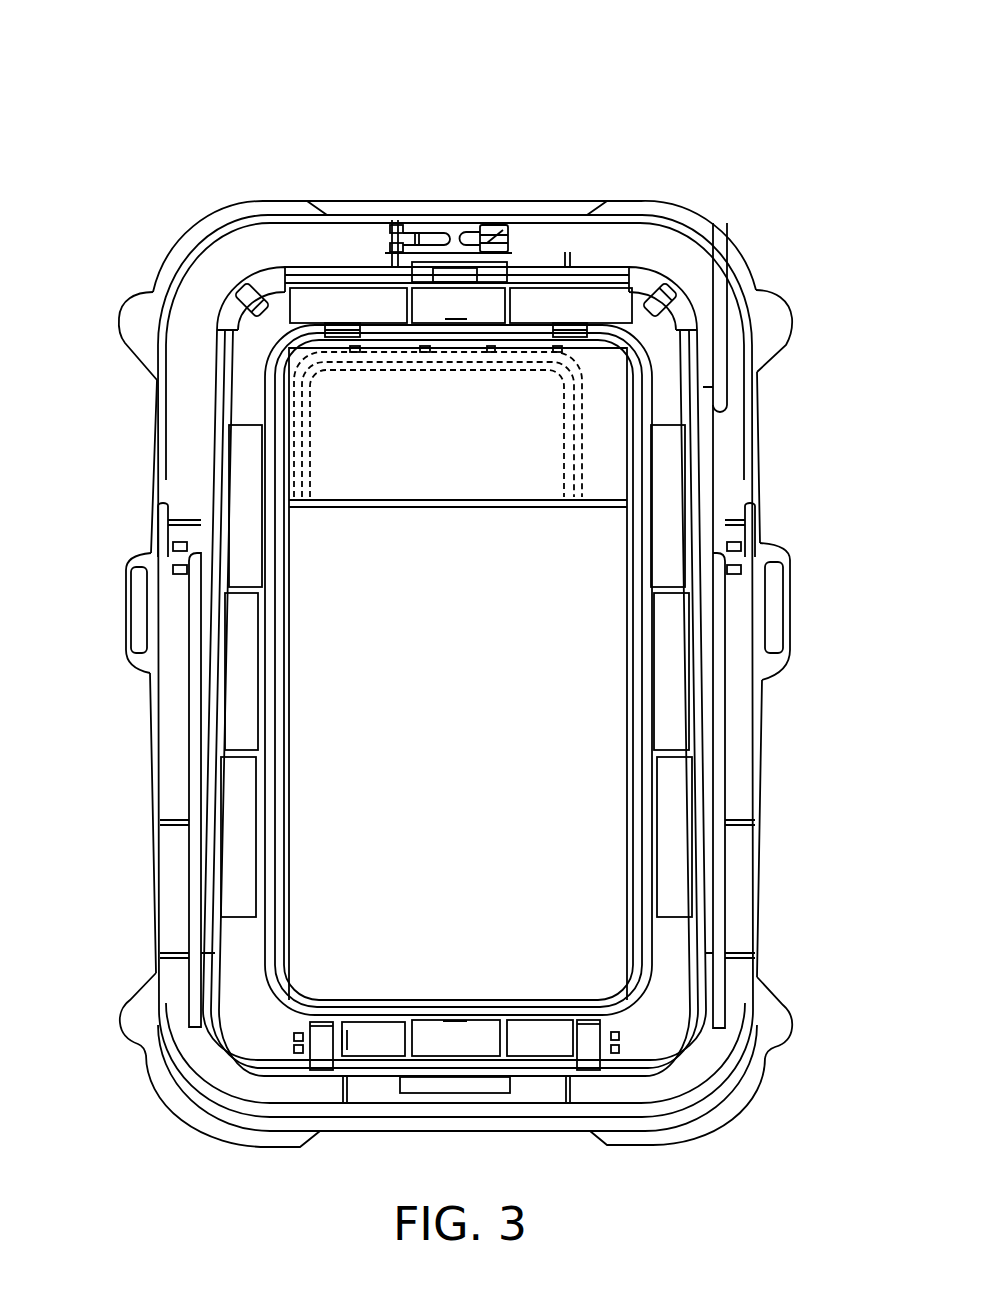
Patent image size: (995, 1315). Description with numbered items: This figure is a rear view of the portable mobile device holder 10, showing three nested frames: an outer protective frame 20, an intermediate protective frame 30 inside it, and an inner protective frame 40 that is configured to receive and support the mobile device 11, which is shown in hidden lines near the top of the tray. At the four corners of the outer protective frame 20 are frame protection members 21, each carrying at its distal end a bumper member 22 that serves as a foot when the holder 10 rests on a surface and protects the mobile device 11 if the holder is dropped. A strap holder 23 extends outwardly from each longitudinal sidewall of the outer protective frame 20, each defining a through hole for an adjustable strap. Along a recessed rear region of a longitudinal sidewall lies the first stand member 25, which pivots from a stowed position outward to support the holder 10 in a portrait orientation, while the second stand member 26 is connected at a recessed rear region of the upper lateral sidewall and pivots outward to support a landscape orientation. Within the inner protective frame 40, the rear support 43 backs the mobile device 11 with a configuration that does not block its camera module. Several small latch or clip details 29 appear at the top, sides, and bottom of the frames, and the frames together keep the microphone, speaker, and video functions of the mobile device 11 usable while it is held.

The portable mobile device holder 10 is at (97, 68).
The mobile device 11 is at (365, 470).
The outer protective frame 20 is at (382, 215).
The frame protection member 21 is at (262, 207).
The bumper member 22 is at (123, 322).
The strap holder 23 is at (125, 620).
The first stand member 25 is at (193, 940).
The second stand member 26 is at (737, 390).
The latch clip 29 is at (494, 233).
The intermediate protective frame 30 is at (667, 823).
The inner protective frame 40 is at (267, 742).
The rear support 43 is at (610, 535).